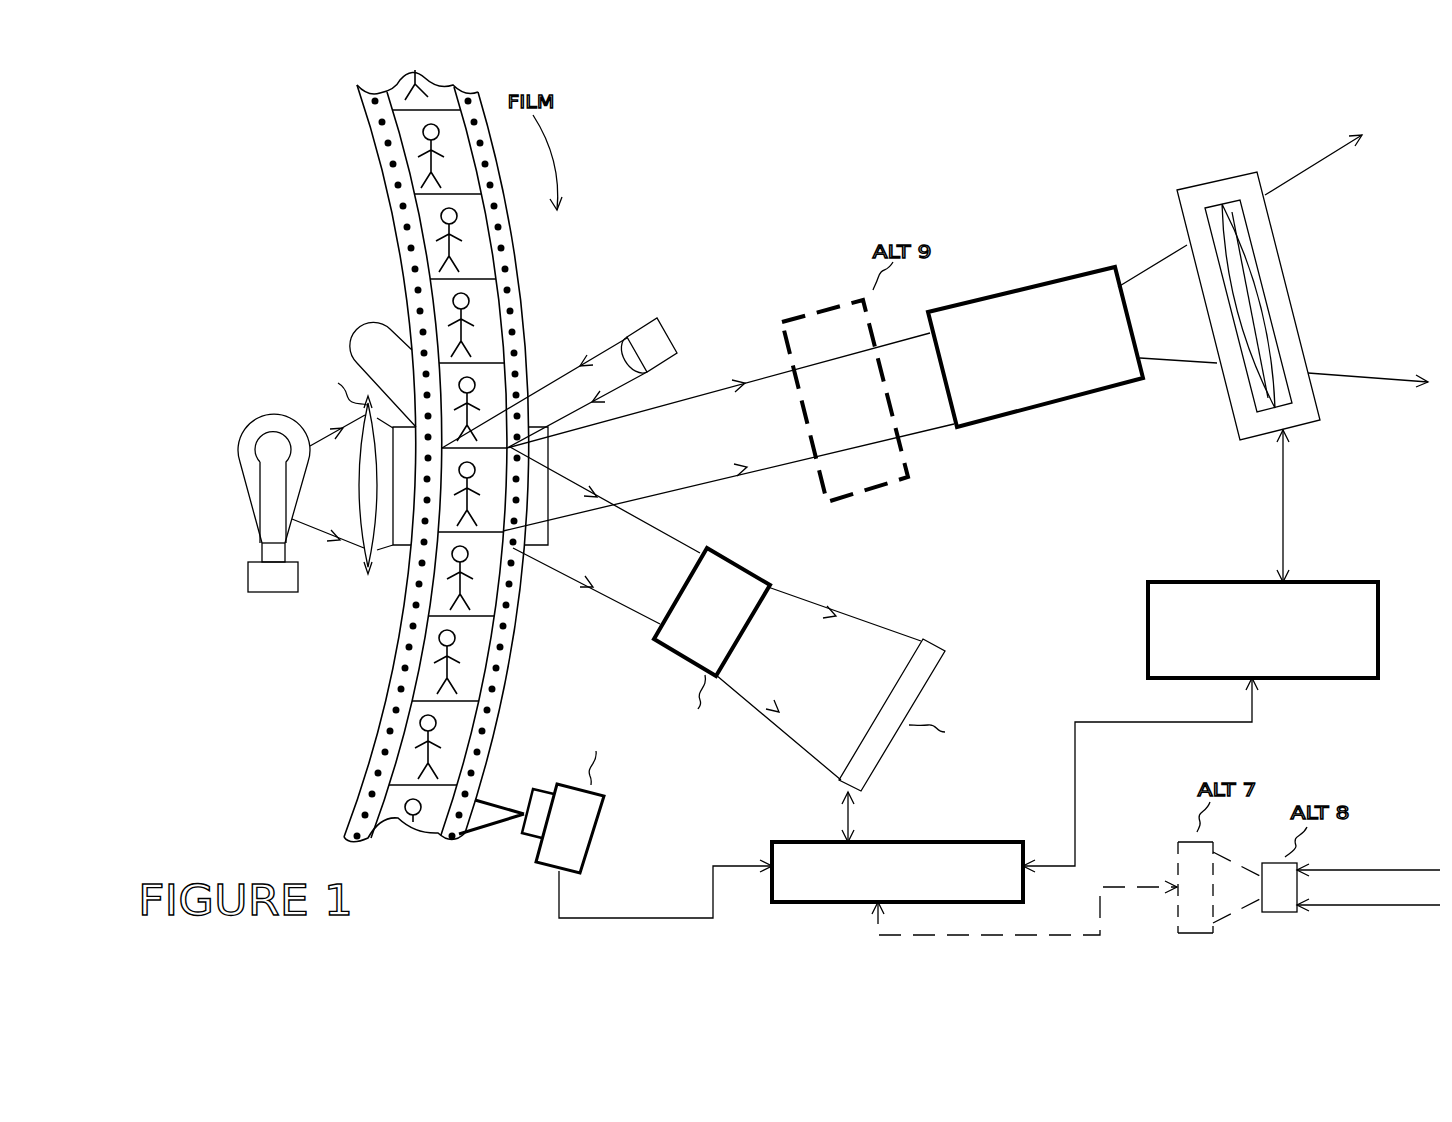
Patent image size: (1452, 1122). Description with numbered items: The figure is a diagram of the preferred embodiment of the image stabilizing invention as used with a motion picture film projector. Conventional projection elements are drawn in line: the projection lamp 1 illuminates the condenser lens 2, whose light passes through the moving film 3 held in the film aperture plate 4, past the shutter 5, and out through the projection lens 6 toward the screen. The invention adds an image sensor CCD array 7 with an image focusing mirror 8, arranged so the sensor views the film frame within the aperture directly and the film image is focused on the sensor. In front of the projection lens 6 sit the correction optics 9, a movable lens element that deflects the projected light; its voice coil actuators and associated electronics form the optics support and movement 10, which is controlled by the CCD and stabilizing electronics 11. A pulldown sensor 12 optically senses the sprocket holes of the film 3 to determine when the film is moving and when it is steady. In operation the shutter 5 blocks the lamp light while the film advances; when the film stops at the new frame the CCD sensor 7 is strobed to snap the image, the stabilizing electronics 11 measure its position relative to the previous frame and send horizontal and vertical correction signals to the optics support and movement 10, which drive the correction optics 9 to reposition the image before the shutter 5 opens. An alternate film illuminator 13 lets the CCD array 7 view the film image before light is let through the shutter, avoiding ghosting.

The projection lamp 1 is at (287, 594).
The condenser lens 2 is at (367, 560).
The moving film 3 is at (413, 842).
The film aperture plate 4 is at (402, 547).
The shutter 5 is at (363, 330).
The projection lens 6 is at (1027, 281).
The image sensor CCD array 7 is at (936, 634).
The image focusing mirror 8 is at (748, 557).
The correction optics 9 is at (1350, 402).
The optics support and movement 10 is at (1148, 580).
The CCD and stabilizing electronics 11 is at (938, 840).
The pulldown sensor 12 is at (600, 837).
The alternate film illuminator 13 is at (642, 317).